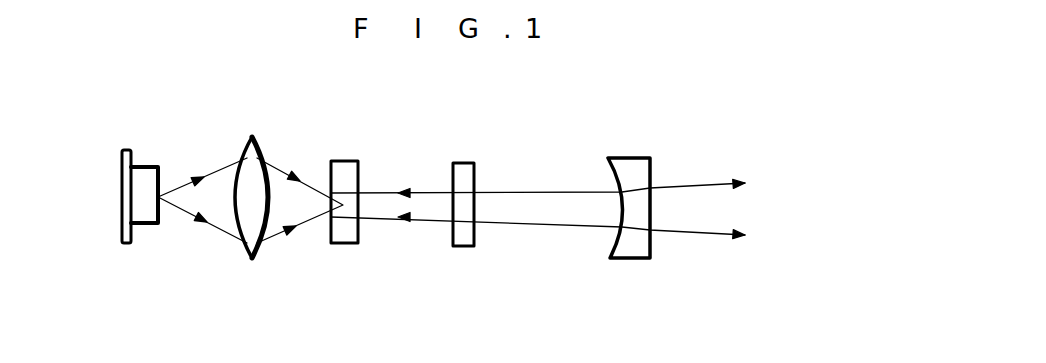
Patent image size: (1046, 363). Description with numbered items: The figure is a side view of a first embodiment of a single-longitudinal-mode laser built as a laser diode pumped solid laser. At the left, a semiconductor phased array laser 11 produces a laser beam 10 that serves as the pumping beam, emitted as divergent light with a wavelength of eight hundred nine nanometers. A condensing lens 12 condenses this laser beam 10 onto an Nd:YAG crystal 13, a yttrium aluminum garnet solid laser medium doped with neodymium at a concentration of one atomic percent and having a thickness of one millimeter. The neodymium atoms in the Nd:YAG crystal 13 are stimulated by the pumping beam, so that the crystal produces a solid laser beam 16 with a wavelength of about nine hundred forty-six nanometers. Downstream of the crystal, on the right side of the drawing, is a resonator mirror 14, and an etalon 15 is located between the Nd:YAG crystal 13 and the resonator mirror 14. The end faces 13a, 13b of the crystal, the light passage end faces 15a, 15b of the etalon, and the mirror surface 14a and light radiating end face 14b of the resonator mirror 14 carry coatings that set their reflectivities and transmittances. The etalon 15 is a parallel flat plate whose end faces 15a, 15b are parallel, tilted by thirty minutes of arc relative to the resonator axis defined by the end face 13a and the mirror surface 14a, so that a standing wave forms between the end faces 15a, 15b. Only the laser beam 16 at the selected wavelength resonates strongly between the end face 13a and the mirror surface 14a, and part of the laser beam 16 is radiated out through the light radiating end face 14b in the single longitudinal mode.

The laser beam 10 is at (220, 169).
The semiconductor laser (phased array laser) 11 is at (143, 166).
The condensing lens 12 is at (257, 155).
The Nd:YAG crystal 13 is at (345, 152).
The end face of Nd:YAG crystal 13a is at (329, 238).
The end face of Nd:YAG crystal 13b is at (359, 238).
The resonator mirror 14 is at (633, 149).
The mirror surface 14a is at (612, 242).
The light radiating end face 14b is at (652, 242).
The etalon 15 is at (470, 152).
The light passage end face of etalon 15a is at (452, 246).
The light passage end face of etalon 15b is at (476, 248).
The solid laser beam 16 is at (708, 187).